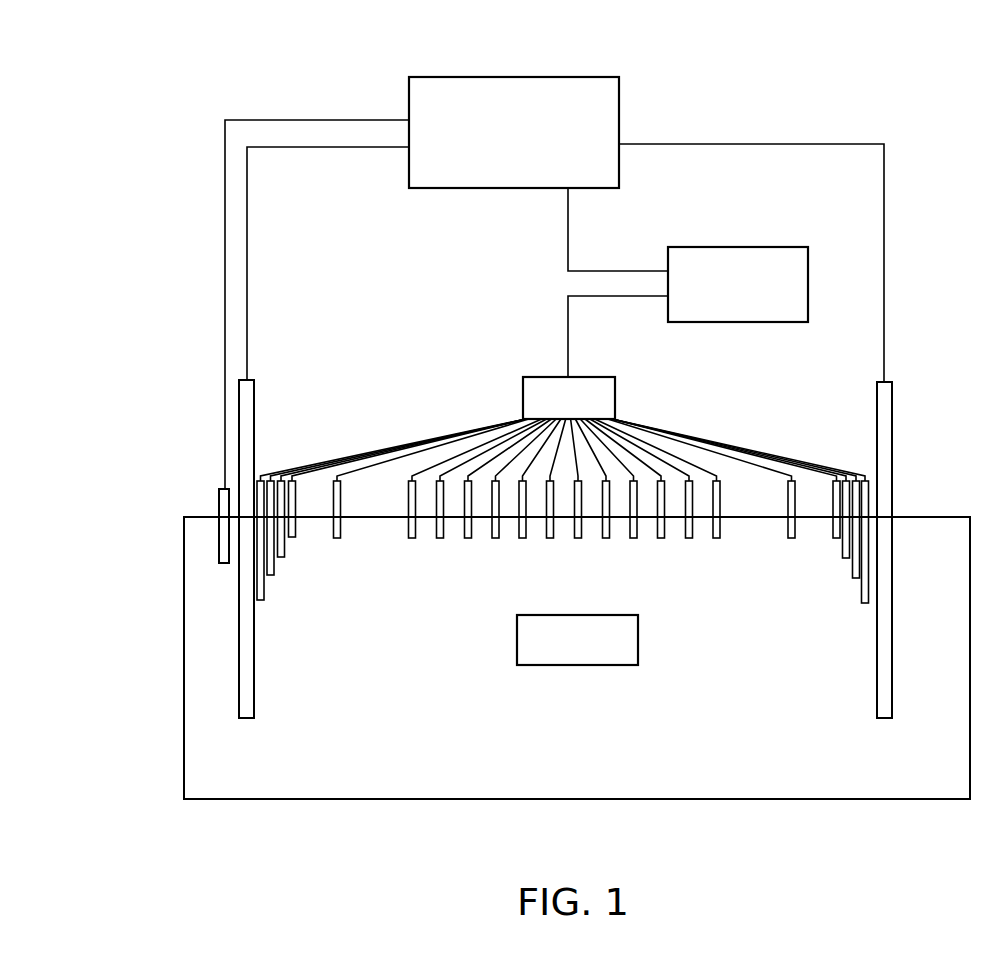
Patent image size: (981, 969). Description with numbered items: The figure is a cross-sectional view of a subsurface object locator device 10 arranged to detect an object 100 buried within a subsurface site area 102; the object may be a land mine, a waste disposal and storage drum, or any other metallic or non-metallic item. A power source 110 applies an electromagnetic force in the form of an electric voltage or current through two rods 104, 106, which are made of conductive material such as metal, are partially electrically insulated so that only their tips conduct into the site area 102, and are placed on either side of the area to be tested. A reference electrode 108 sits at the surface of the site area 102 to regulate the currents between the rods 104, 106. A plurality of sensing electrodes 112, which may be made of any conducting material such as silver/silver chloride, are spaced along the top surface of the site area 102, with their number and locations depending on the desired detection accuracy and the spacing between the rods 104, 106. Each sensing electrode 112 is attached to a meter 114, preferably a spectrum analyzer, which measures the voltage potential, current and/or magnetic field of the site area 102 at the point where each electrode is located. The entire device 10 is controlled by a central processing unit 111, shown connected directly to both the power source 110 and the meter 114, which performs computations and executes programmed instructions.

The subsurface object locator device 10 is at (940, 140).
The object 100 is at (638, 640).
The subsurface site area 102 is at (184, 705).
The rod 104 is at (239, 449).
The rod 106 is at (892, 427).
The reference electrode 108 is at (219, 495).
The power source 110 is at (586, 77).
The central processing unit 111 is at (776, 247).
The sensing electrodes 112 is at (542, 547).
The meter 114 is at (617, 399).